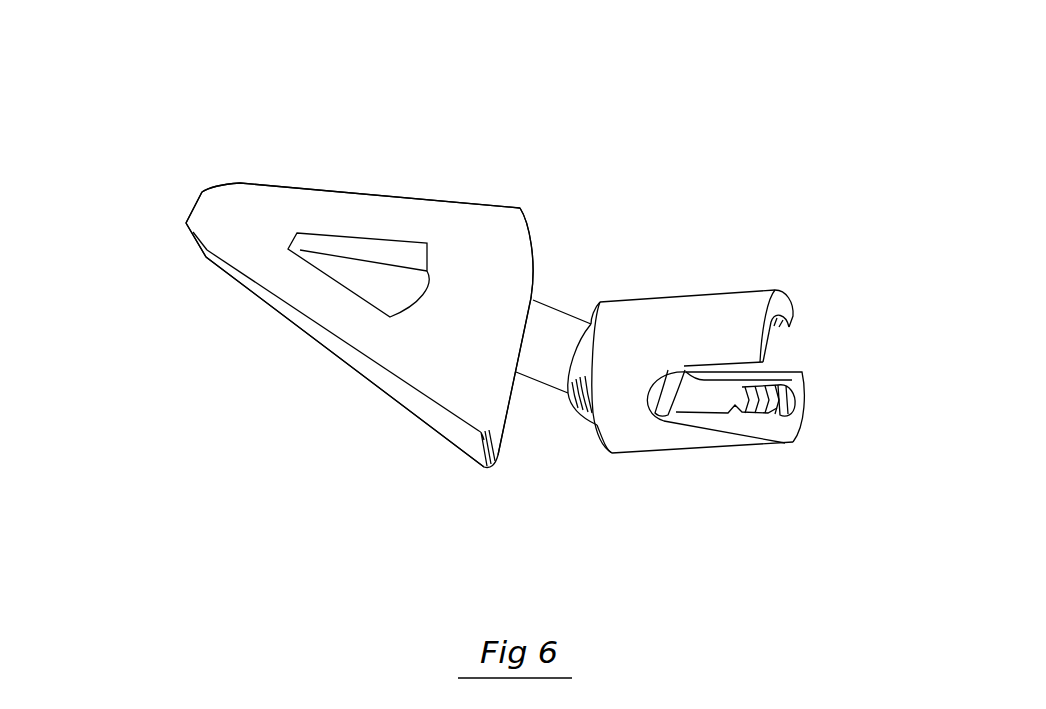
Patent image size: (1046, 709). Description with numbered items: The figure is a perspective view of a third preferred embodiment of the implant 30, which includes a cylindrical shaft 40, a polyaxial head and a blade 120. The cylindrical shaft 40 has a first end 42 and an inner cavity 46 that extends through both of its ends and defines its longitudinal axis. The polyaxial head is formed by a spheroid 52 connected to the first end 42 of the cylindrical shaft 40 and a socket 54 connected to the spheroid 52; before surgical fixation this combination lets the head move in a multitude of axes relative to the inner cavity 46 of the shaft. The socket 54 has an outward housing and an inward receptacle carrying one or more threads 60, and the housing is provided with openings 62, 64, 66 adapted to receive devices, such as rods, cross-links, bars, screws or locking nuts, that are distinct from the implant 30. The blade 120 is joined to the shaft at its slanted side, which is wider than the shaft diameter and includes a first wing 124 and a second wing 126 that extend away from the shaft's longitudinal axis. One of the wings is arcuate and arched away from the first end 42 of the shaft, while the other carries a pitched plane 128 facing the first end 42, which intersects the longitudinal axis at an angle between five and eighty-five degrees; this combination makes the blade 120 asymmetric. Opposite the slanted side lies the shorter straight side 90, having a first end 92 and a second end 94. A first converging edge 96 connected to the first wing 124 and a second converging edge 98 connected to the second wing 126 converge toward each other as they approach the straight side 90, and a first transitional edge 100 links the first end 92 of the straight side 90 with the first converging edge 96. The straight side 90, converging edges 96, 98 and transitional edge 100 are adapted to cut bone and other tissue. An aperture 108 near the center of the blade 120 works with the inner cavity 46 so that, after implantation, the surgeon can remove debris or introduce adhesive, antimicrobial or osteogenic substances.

The implant 30 is at (486, 287).
The blade 120 is at (359, 243).
The second converging edge 98 is at (380, 148).
The second end 94 is at (158, 132).
The straight side 90 is at (122, 187).
The first end 92 is at (129, 238).
The first transitional edge 100 is at (126, 278).
The first converging edge 96 is at (342, 358).
The first wing 124 is at (452, 491).
The pitched plane 128 is at (573, 404).
The second wing 126 is at (610, 217).
The aperture 108 is at (424, 226).
The cylindrical shaft 40 is at (604, 294).
The spheroid 52 is at (649, 332).
The socket 54 is at (696, 422).
The opening 66 is at (844, 335).
The opening 62 is at (849, 327).
The inner cavity 46 is at (752, 335).
The first end 42 is at (780, 442).
The threads 60 is at (837, 404).
The opening 64 is at (758, 467).